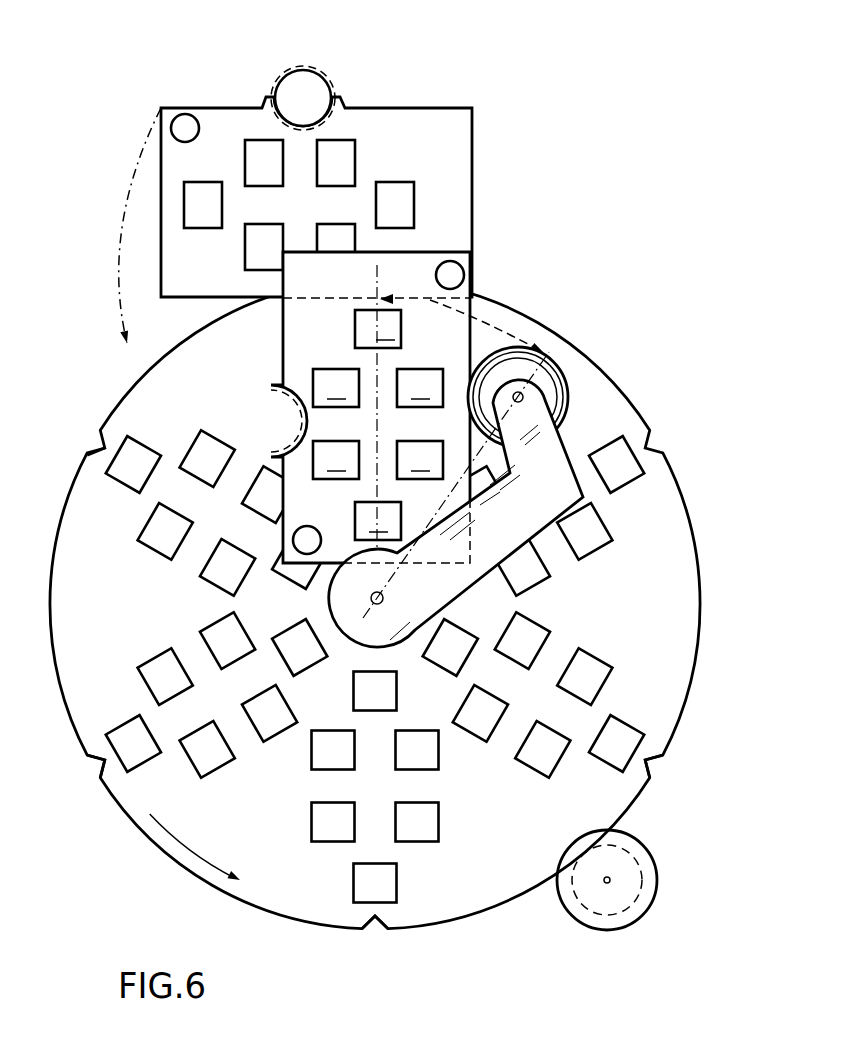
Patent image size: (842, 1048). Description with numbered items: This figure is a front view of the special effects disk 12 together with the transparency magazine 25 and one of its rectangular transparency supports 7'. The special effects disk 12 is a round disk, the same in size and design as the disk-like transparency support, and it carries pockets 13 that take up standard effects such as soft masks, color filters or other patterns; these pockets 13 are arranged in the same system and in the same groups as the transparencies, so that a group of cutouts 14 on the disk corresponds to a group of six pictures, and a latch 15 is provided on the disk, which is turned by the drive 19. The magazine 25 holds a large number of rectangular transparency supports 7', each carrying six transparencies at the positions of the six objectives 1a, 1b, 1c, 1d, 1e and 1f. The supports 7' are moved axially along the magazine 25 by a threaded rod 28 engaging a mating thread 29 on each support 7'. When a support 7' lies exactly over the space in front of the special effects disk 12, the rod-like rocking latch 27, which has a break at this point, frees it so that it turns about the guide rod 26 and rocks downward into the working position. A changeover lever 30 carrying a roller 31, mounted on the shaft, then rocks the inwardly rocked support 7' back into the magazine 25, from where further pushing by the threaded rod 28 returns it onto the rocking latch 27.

The objective 1a is at (378, 329).
The objective 1b is at (336, 388).
The objective 1c is at (420, 388).
The objective 1d is at (336, 460).
The objective 1e is at (420, 460).
The objective 1f is at (378, 521).
The rectangular transparency support 7' is at (335, 299).
The special effects disk 12 is at (463, 915).
The pockets 13 is at (628, 470).
The group of cutouts 14 is at (88, 762).
The latch 15 is at (98, 447).
The drive for special effects disk 19 is at (645, 903).
The transparency magazine 25 is at (526, 115).
The guide rod 26 is at (455, 272).
The rocking latch 27 is at (185, 122).
The threaded rod 28 is at (303, 80).
The mating thread 29 is at (353, 107).
The changeover lever 30 is at (557, 463).
The roller 31 is at (556, 380).